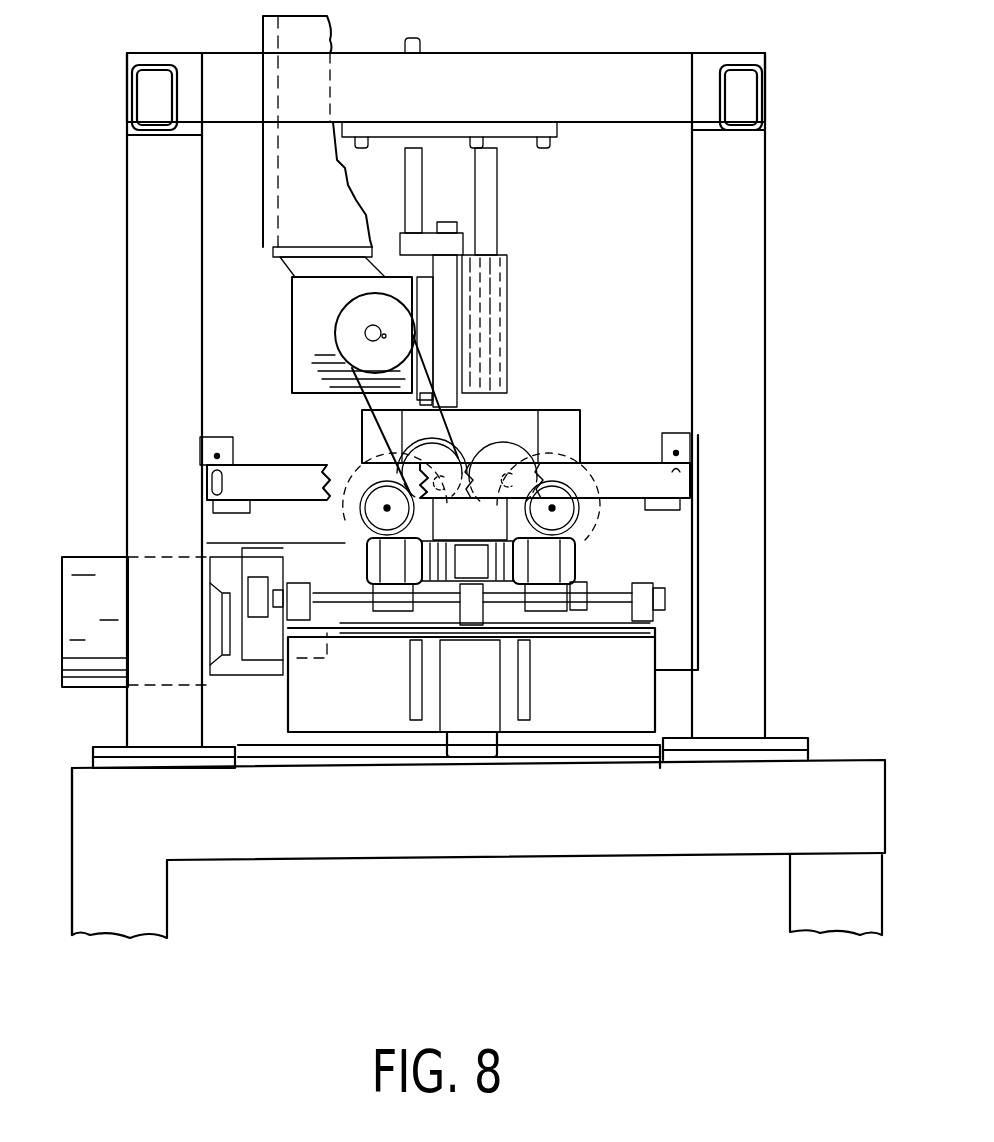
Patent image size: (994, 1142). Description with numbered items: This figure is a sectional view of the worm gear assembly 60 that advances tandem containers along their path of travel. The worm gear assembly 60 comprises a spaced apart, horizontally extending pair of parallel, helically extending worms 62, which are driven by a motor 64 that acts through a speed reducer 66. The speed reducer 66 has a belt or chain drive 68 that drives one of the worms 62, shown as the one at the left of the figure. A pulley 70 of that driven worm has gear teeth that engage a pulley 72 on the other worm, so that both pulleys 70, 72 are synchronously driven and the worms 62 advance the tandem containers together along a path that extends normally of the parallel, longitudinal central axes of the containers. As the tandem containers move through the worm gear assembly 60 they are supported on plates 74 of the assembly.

The worm gear assembly 60 is at (517, 373).
The worms 62 is at (490, 499).
The motor 64 is at (277, 217).
The speed reducer 66 is at (307, 322).
The belt drive 68 is at (361, 398).
The pulley 70 is at (457, 455).
The pulley 72 is at (510, 455).
The plates 74 is at (380, 595).